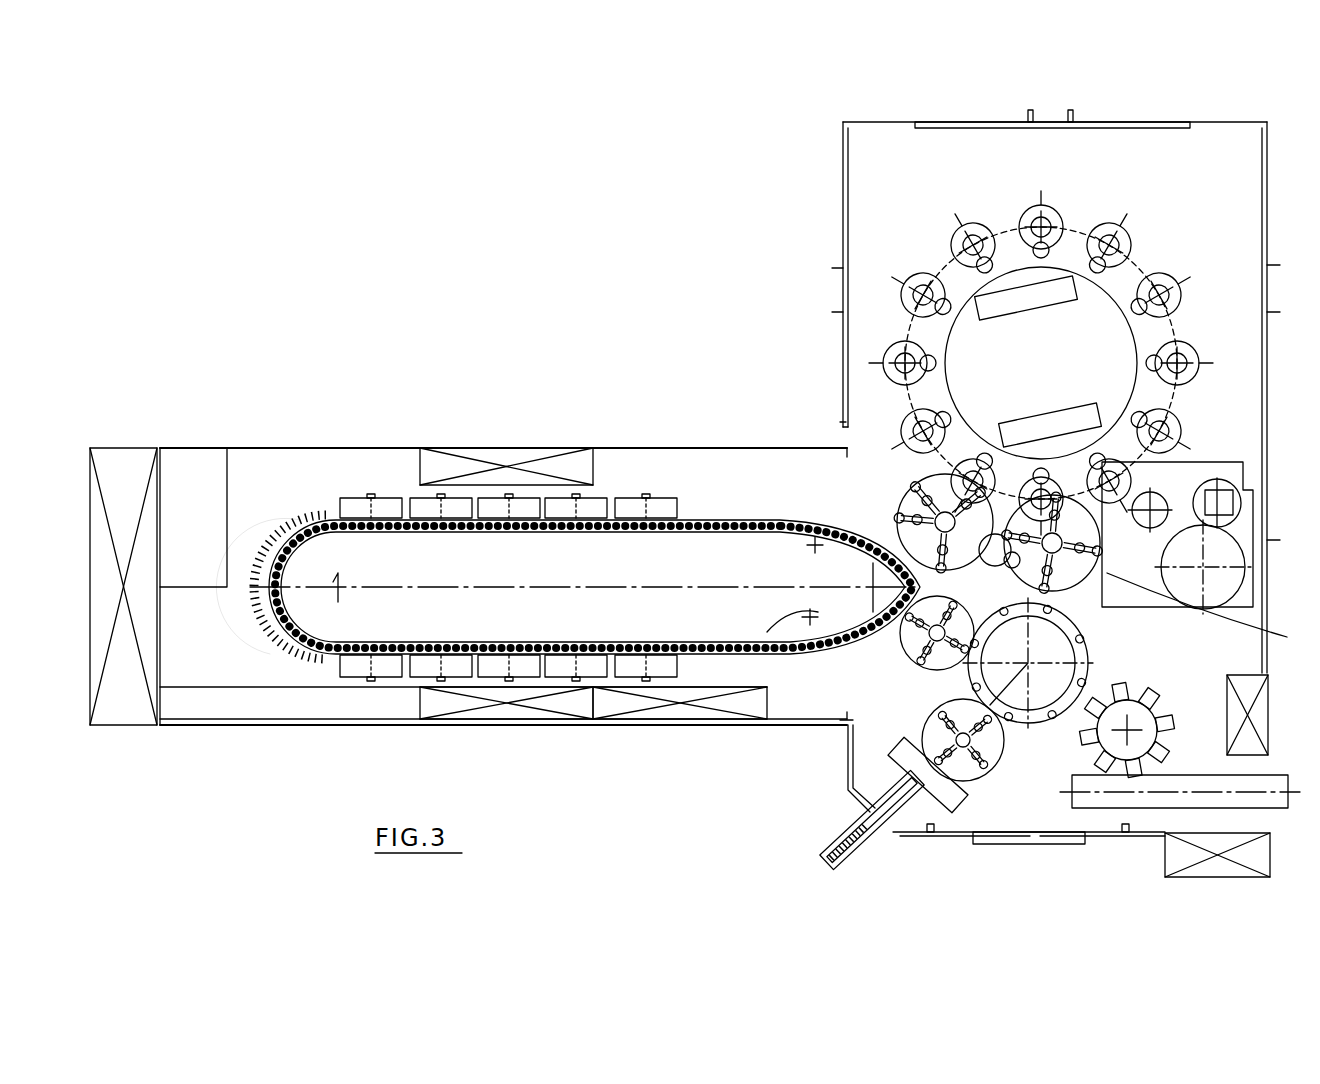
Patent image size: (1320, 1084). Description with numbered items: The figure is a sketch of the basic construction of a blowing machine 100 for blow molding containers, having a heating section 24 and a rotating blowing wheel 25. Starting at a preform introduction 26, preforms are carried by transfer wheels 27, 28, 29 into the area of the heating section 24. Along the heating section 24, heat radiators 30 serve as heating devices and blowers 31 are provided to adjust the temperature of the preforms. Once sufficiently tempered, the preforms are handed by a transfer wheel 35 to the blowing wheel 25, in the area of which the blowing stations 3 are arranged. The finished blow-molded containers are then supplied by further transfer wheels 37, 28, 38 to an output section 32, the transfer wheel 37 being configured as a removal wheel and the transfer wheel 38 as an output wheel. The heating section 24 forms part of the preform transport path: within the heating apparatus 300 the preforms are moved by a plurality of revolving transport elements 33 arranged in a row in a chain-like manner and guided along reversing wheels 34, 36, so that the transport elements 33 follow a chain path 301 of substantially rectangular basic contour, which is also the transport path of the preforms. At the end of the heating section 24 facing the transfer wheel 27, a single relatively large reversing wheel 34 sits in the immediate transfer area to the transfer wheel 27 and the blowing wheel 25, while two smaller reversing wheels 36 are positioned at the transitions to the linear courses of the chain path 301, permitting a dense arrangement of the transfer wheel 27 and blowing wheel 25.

The blowing machine 100 is at (404, 162).
The heating apparatus 300 is at (314, 340).
The chain path 301 is at (290, 515).
The heat radiators 30 is at (385, 497).
The blowers 31 is at (497, 458).
The heating section 24 is at (633, 468).
The reversing wheels 36 is at (813, 543).
The transfer wheel 35 is at (935, 478).
The blowing wheel 25 is at (975, 290).
The blowing stations 3 is at (893, 357).
The transport elements 33 is at (308, 645).
The reversing wheel 34 is at (339, 590).
The transfer wheel 29 is at (905, 668).
The preform introduction 26 is at (878, 842).
The transfer wheel 27 is at (980, 782).
The transfer wheel 28 is at (1030, 722).
The transfer wheel 38 is at (1130, 748).
The output section 32 is at (1276, 810).
The transfer wheel 37 is at (1149, 556).